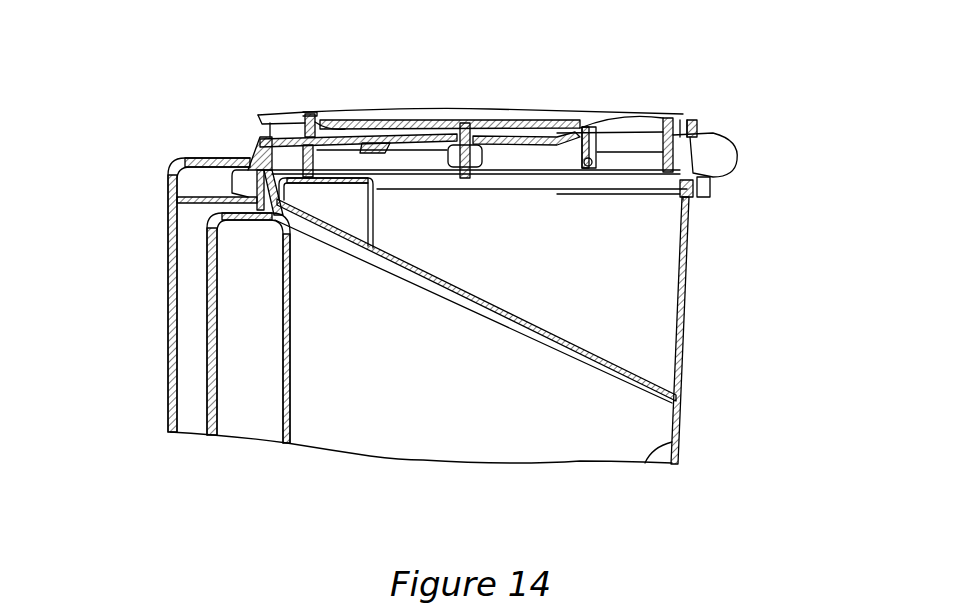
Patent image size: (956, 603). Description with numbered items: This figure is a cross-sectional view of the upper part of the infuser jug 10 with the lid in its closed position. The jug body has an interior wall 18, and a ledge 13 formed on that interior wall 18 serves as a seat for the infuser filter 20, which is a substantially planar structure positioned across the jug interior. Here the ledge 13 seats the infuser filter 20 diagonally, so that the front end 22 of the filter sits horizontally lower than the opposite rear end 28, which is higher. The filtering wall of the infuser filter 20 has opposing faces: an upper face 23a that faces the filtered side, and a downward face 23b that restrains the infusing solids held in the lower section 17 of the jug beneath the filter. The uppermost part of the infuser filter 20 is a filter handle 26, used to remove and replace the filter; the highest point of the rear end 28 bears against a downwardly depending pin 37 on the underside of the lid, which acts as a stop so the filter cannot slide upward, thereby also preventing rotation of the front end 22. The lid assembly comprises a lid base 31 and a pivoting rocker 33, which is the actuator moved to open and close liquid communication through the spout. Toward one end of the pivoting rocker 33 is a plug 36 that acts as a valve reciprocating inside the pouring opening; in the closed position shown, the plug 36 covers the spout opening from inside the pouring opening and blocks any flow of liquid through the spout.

The infuser jug 10 is at (104, 80).
The ledge 13 is at (683, 412).
The lower section 17 is at (365, 435).
The interior wall 18 is at (680, 463).
The infuser filter 20 is at (452, 318).
The front end 22 is at (666, 410).
The upper face 23a is at (580, 333).
The downward face 23b is at (520, 335).
The filter handle 26 is at (173, 196).
The rear end 28 is at (274, 220).
The lid base 31 is at (697, 130).
The pivoting rocker 33 is at (553, 110).
The plug 36 is at (598, 155).
The pin 37 is at (297, 163).